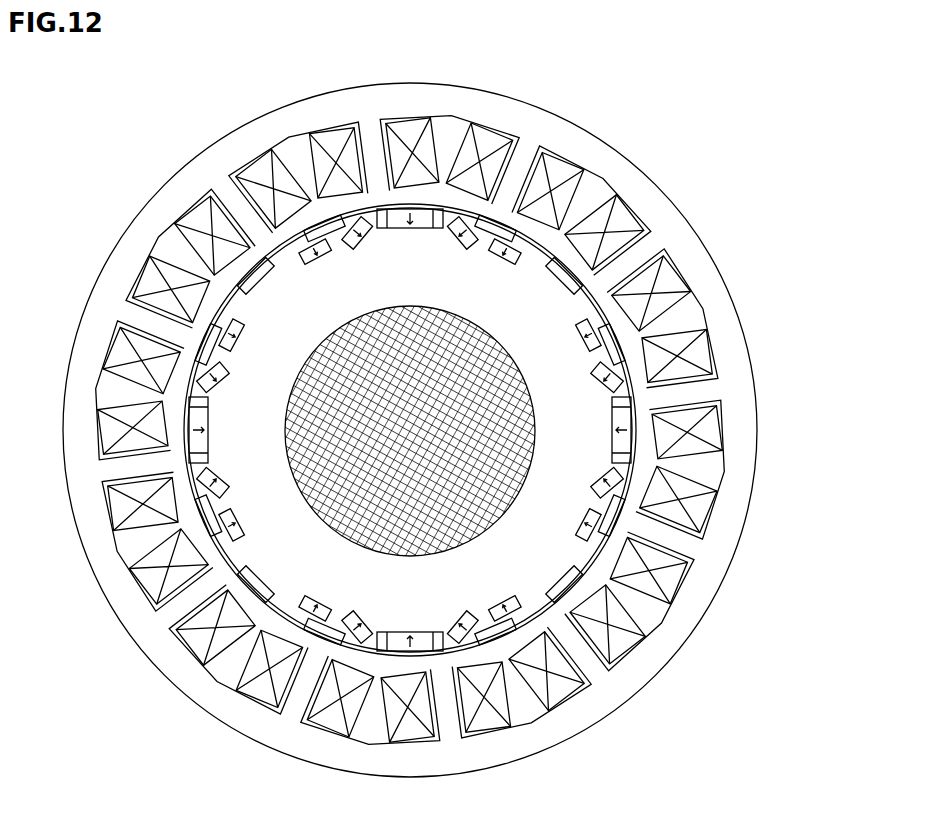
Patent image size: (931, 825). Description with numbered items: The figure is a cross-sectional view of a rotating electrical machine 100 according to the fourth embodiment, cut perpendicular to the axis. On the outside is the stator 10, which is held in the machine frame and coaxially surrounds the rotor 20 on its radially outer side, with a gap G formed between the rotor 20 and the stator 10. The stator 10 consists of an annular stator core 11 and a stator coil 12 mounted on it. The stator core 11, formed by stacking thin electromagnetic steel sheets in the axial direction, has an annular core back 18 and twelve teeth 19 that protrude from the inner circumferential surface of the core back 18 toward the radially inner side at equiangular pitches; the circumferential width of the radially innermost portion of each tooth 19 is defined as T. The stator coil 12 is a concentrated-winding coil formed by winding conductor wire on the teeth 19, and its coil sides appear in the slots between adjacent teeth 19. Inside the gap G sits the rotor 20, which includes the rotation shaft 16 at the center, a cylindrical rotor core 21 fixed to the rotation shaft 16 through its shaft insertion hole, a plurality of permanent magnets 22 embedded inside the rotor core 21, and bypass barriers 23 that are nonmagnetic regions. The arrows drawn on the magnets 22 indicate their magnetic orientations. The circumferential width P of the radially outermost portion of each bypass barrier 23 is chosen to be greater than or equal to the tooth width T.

The rotating electrical machine 100 is at (76, 153).
The stator 10 is at (772, 70).
The stator core 11 is at (410, 425).
The stator coil 12 is at (465, 386).
The core back 18 is at (419, 430).
The teeth 19 is at (417, 430).
The gap G is at (482, 430).
The rotor 20 is at (822, 356).
The rotation shaft 16 is at (500, 430).
The rotor core 21 is at (633, 457).
The permanent magnets 22 is at (497, 430).
The bypass barriers 23 is at (501, 430).